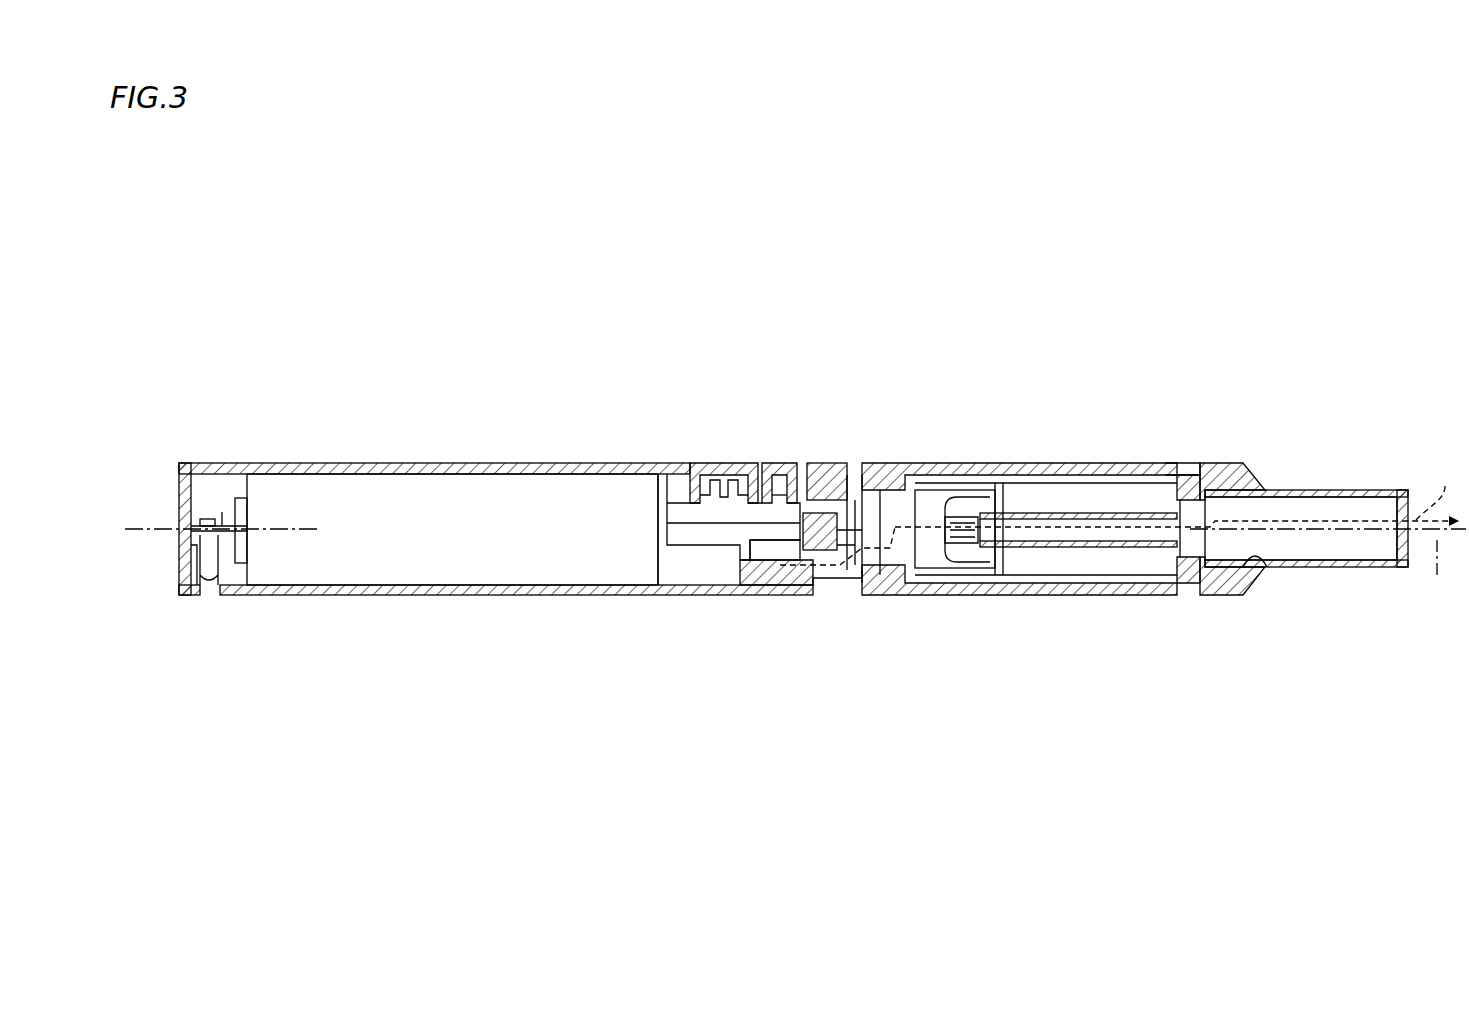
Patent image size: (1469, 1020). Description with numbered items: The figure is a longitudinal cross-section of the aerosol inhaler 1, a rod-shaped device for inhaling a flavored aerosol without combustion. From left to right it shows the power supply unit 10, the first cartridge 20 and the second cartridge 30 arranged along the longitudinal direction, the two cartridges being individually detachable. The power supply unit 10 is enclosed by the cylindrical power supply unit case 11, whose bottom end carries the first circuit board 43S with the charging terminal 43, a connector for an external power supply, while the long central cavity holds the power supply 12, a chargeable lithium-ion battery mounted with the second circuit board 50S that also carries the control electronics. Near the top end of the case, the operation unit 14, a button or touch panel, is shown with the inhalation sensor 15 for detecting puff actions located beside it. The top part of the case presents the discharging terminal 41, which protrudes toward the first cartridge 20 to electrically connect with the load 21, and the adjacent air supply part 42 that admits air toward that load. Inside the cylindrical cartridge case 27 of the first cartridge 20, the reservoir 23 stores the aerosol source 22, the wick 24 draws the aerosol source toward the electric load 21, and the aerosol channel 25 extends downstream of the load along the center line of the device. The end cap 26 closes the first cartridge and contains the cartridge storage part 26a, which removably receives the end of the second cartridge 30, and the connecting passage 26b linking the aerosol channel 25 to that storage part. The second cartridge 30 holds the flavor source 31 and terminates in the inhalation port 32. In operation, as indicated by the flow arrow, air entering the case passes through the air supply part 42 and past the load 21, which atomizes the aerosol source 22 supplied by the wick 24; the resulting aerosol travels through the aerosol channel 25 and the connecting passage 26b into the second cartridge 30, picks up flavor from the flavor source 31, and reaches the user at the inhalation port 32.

The aerosol inhaler 1 is at (1053, 313).
The power supply unit 10 is at (480, 461).
The power supply unit case 11 is at (610, 462).
The power supply 12 is at (462, 568).
The operation unit 14 is at (740, 462).
The inhalation sensor 15 is at (776, 548).
The first cartridge 20 is at (1098, 470).
The load 21 is at (937, 496).
The aerosol source 22 is at (1037, 575).
The reservoir 23 is at (1035, 500).
The wick 24 is at (985, 490).
The aerosol channel 25 is at (1108, 540).
The end cap 26 is at (1260, 490).
The cartridge storage part 26a is at (1257, 554).
The connecting passage 26b is at (1233, 470).
The cartridge case 27 is at (1183, 470).
The second cartridge 30 is at (1327, 484).
The flavor source 31 is at (1287, 510).
The inhalation port 32 is at (1396, 497).
The discharging terminal 41 is at (865, 545).
The air supply part 42 is at (865, 580).
The charging terminal 43 is at (208, 592).
The first circuit board 43S is at (222, 512).
The second circuit board 50S is at (722, 530).